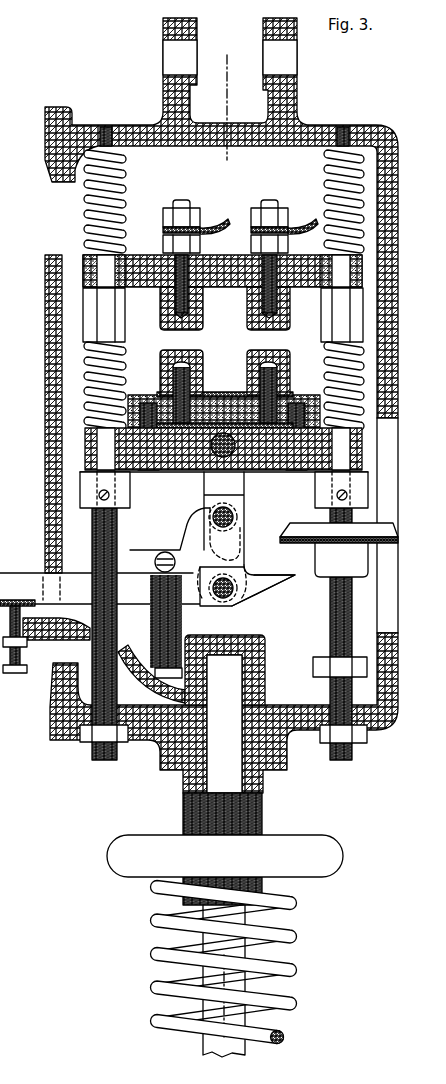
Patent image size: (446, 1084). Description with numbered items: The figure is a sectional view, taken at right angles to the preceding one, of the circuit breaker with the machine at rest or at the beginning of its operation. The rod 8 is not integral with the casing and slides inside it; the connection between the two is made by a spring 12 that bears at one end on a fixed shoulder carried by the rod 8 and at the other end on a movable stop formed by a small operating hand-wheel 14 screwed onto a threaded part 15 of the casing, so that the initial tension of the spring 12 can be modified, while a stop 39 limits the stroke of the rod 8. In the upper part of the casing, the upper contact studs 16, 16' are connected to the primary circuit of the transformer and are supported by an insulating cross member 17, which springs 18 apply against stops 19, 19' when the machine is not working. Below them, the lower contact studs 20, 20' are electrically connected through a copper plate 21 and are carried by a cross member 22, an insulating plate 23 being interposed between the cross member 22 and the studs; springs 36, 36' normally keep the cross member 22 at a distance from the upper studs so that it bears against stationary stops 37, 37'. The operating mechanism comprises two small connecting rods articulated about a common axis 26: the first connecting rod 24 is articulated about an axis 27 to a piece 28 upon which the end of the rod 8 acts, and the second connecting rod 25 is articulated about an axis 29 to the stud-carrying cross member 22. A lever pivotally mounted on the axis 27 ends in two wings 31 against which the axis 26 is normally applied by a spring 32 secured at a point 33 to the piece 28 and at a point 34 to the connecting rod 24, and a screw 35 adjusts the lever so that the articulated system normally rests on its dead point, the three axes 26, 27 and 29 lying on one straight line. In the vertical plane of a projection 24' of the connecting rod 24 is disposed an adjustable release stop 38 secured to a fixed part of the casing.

The rod 8 is at (240, 777).
The spring 12 is at (285, 940).
The operating hand-wheel 14 is at (333, 862).
The threaded part 15 is at (267, 810).
The upper contact stud 16 is at (189, 303).
The upper contact stud 16' is at (278, 302).
The insulating cross member 17 is at (224, 257).
The springs 18 is at (116, 180).
The stop 19 is at (117, 320).
The stop 19' is at (378, 320).
The lower contact stud 20 is at (193, 386).
The lower contact stud 20' is at (282, 386).
The copper plate 21 is at (235, 392).
The cross member 22 is at (193, 452).
The insulating plate 23 is at (165, 397).
The connecting rod 24 is at (246, 570).
The projection 24' is at (269, 593).
The connecting rod 25 is at (237, 482).
The common axis 26 is at (233, 517).
The axis 27 is at (230, 602).
The piece 28 is at (253, 672).
The axis 29 is at (230, 447).
The wings 31 is at (185, 528).
The spring 32 is at (152, 640).
The securing point 33 is at (167, 668).
The securing point 34 is at (157, 560).
The screw 35 is at (18, 676).
The spring 36 is at (95, 386).
The spring 36' is at (375, 386).
The stationary stop 37 is at (97, 504).
The stationary stop 37' is at (371, 494).
The adjustable release stop 38 is at (387, 533).
The stop 39 is at (257, 983).